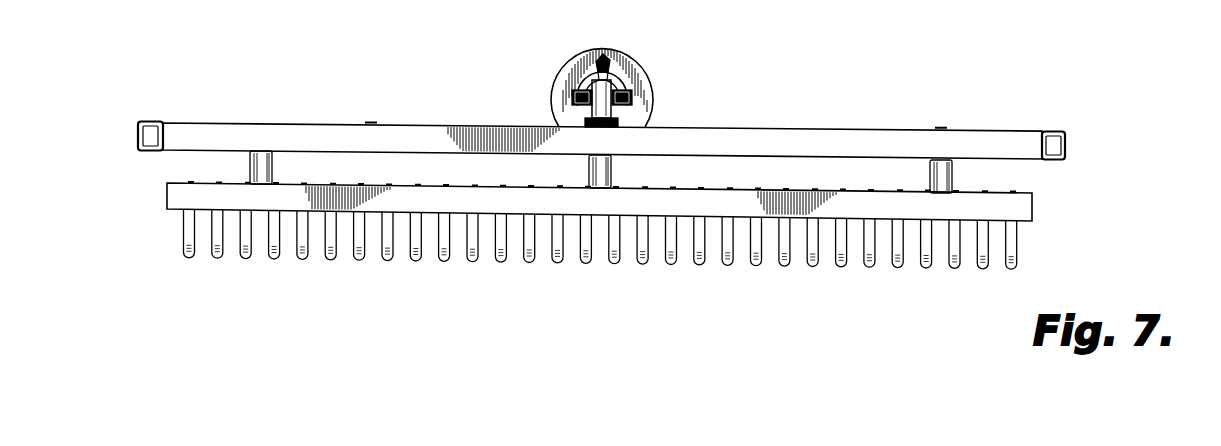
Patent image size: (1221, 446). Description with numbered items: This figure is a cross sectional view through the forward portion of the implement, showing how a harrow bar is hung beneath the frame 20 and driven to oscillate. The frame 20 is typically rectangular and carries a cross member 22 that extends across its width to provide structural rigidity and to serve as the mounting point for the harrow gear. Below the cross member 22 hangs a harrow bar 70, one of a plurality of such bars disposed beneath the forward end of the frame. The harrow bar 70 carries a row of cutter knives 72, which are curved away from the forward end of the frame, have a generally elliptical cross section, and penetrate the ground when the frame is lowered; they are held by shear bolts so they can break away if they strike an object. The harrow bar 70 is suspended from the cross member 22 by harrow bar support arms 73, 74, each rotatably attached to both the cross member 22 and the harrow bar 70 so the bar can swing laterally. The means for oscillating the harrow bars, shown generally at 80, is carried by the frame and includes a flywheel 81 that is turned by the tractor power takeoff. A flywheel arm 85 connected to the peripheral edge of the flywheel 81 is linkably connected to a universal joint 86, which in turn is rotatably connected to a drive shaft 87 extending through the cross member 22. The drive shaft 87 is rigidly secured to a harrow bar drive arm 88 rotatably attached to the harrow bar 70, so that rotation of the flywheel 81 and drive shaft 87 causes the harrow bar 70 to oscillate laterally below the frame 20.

The frame 20 is at (804, 129).
The cross member 22 is at (703, 128).
The harrow bar 70 is at (559, 210).
The cutter knives 72 is at (535, 250).
The harrow bar support arm 73 is at (930, 173).
The harrow bar support arm 74 is at (273, 166).
The harrow bar drive arm 88 is at (612, 170).
The means for oscillating the harrow bars 80 is at (616, 77).
The flywheel 81 is at (651, 82).
The flywheel arm 85 is at (598, 62).
The universal joint 86 is at (577, 80).
The drive shaft 87 is at (574, 99).